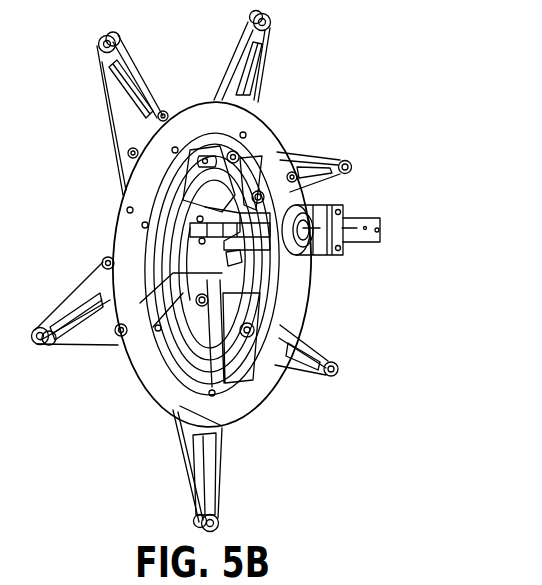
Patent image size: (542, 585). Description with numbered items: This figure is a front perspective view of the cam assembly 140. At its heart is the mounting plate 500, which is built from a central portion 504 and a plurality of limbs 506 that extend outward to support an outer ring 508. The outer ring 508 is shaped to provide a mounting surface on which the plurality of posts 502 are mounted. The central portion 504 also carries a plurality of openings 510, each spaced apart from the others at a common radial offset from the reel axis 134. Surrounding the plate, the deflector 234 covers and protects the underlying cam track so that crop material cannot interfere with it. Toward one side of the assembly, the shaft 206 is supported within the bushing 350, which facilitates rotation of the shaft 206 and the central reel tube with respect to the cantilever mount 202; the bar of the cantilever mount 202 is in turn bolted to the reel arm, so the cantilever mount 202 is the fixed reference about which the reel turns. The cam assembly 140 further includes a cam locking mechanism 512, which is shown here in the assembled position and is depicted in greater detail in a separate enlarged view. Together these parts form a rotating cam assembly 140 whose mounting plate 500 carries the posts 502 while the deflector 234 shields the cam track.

The cam assembly 140 is at (97, 176).
The posts 502 is at (142, 224).
The openings 510 is at (199, 241).
The cantilever mount 202 is at (321, 207).
The shaft 206 is at (311, 238).
The reel axis 134 is at (352, 235).
The bushing 350 is at (270, 243).
The cam locking mechanism 512 is at (233, 262).
The deflector 234 is at (244, 396).
The mounting plate 500 is at (151, 287).
The outer ring 508 is at (210, 272).
The limbs 506 is at (222, 285).
The central portion 504 is at (237, 290).